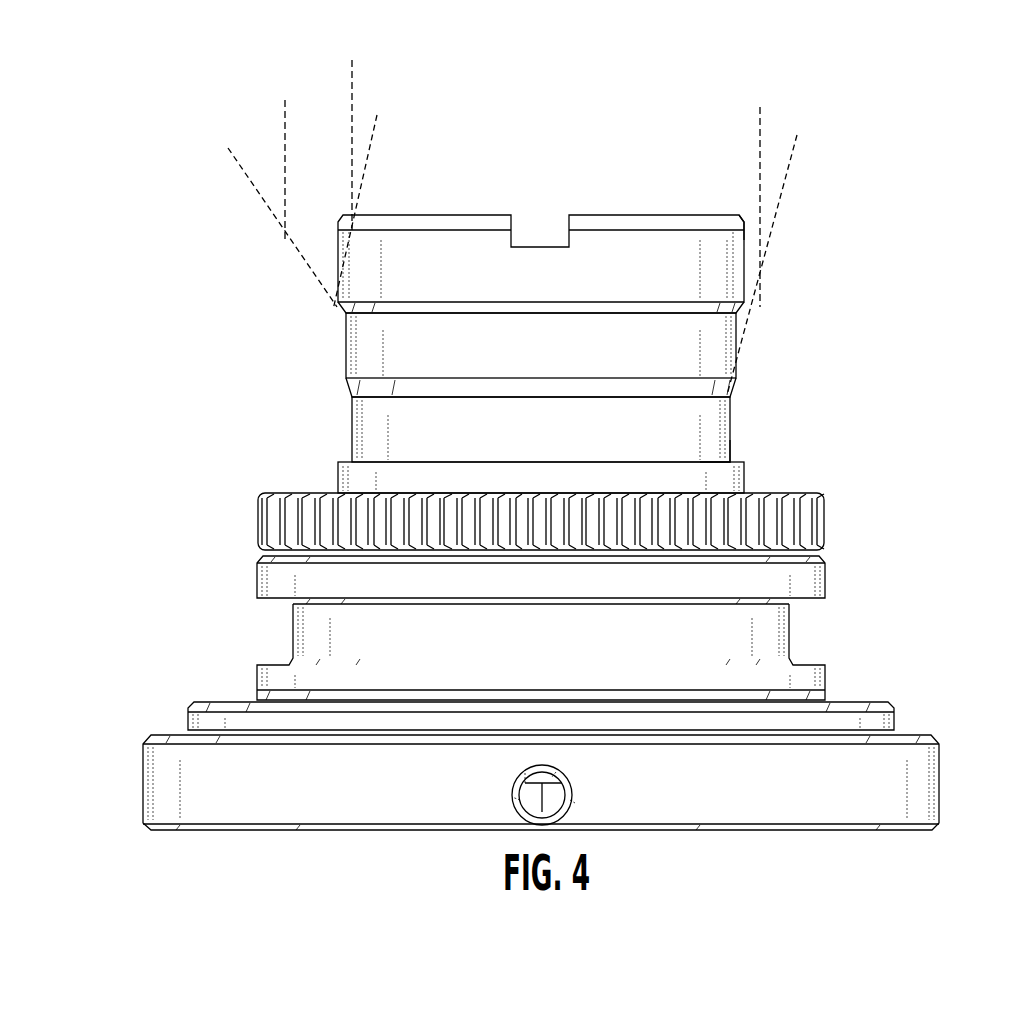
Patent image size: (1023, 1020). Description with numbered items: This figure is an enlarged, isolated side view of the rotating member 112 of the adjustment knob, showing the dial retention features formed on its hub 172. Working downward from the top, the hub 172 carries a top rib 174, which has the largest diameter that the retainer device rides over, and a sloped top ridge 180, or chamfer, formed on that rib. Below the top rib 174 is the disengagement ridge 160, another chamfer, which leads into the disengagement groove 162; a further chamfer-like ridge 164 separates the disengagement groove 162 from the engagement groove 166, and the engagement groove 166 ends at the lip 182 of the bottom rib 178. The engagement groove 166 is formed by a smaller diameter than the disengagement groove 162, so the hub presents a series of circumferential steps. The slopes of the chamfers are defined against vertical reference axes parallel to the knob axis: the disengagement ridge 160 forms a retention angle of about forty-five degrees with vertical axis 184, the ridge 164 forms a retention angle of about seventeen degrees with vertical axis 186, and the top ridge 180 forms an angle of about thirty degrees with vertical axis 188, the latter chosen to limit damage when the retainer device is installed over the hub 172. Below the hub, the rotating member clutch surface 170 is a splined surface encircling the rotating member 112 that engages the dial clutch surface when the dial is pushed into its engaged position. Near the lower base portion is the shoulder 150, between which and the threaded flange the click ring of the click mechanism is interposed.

The rotating member 112 is at (155, 140).
The shoulder 150 is at (930, 783).
The disengagement ridge 160 is at (335, 309).
The disengagement groove 162 is at (345, 345).
The ridge 164 is at (730, 390).
The engagement groove 166 is at (350, 432).
The rotating member clutch surface 170 is at (832, 521).
The hub 172 is at (803, 197).
The top rib 174 is at (638, 240).
The bottom rib 178 is at (745, 480).
The top ridge 180 is at (745, 222).
The lip 182 is at (736, 455).
The vertical axis 184 is at (285, 127).
The vertical axis 186 is at (760, 118).
The vertical axis 188 is at (352, 70).